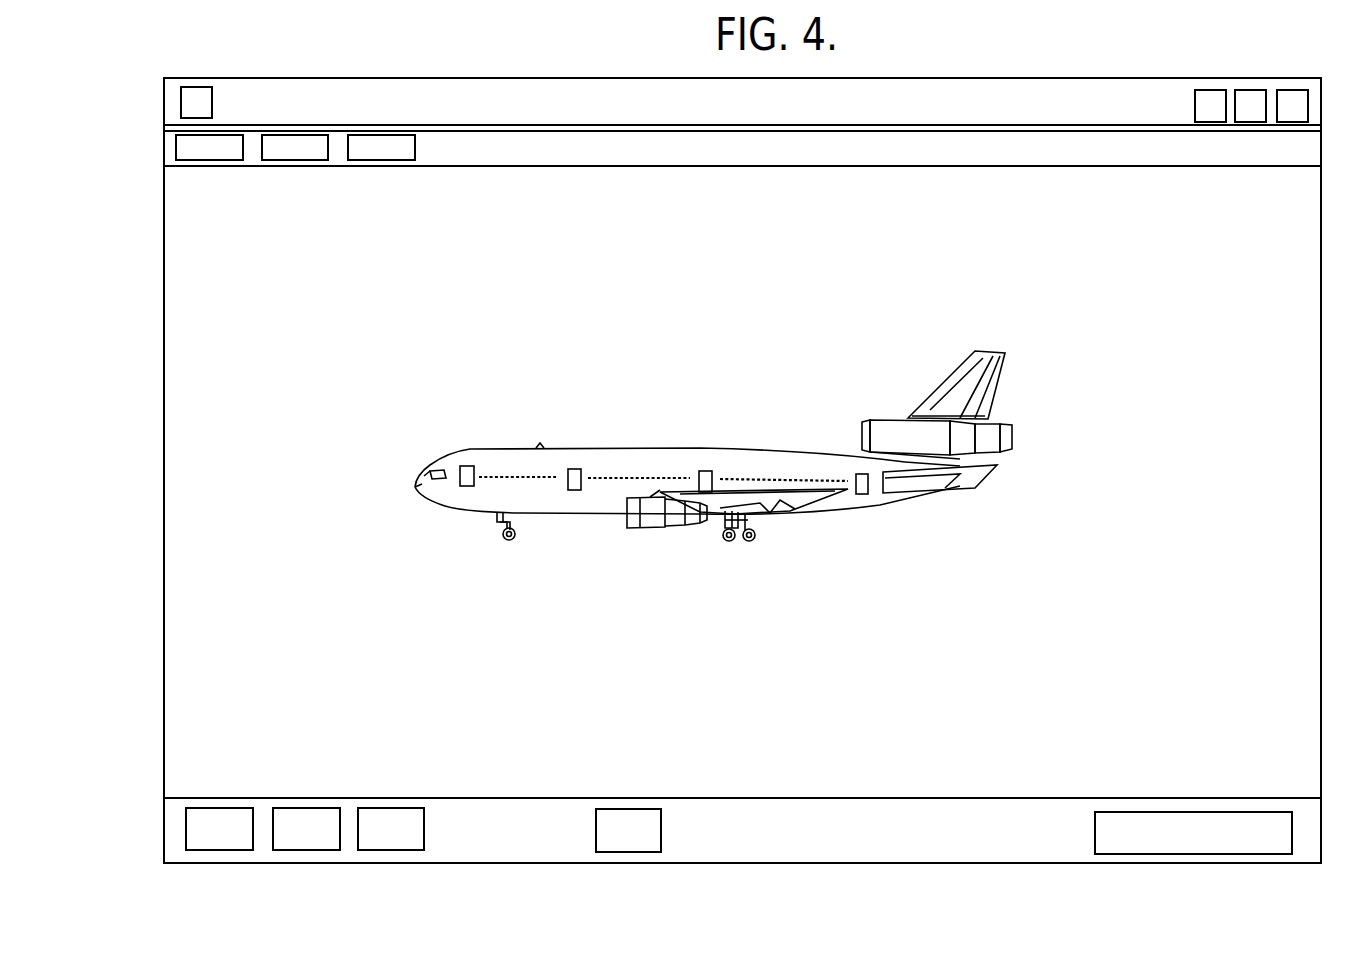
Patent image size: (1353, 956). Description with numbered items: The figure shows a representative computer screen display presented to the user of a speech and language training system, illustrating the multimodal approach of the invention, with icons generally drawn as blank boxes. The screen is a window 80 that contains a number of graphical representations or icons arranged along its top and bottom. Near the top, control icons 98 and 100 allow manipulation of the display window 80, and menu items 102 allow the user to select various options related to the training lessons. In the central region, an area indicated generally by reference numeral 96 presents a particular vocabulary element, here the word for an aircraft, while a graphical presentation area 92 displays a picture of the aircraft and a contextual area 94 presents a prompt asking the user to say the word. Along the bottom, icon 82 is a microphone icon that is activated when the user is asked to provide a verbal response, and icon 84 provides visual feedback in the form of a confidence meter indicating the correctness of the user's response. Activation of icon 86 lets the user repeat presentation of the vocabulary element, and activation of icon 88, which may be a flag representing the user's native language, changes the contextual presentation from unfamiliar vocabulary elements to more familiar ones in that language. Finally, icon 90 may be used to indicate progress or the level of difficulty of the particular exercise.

The window 80 is at (160, 733).
The microphone icon 82 is at (226, 808).
The confidence meter icon 84 is at (320, 808).
The repeat icon 86 is at (405, 808).
The native language icon 88 is at (634, 808).
The progress icon 90 is at (1250, 811).
The graphical presentation area 92 is at (460, 543).
The contextual area 94 is at (505, 590).
The vocabulary element area 96 is at (588, 359).
The control icons 98 is at (1277, 90).
The control icon 100 is at (195, 86).
The menu items 102 is at (340, 166).